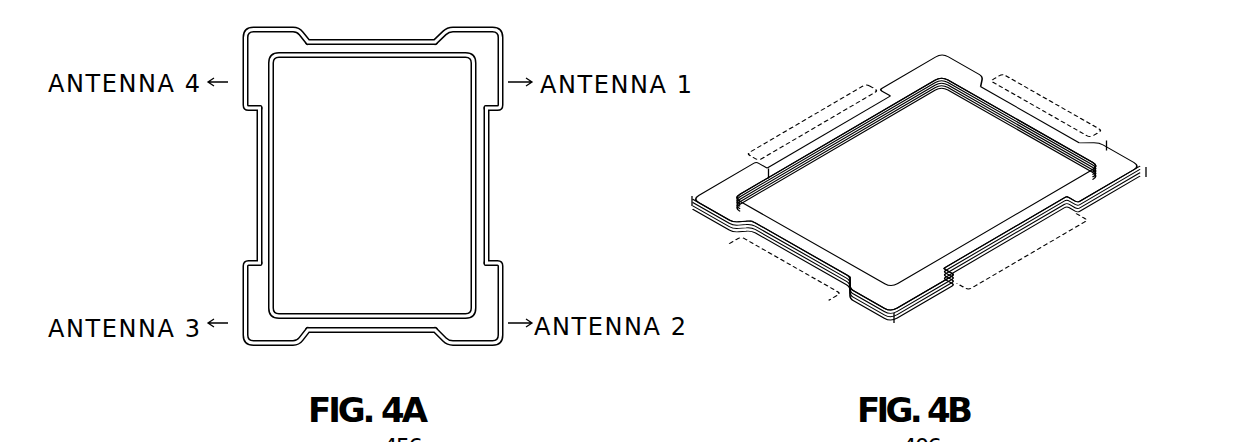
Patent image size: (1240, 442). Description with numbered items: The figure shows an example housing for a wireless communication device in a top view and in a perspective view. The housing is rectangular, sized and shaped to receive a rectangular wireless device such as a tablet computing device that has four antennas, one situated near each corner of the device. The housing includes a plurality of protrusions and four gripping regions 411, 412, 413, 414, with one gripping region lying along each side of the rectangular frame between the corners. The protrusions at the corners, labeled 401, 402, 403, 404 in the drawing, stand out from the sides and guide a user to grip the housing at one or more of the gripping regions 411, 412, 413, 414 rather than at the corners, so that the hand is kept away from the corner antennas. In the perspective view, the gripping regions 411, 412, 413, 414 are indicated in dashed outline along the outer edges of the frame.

In FIG. 4A, the first corner portion (antenna 1 feed) 401 is at (505, 55).
In FIG. 4B, the first corner portion (antenna 1 feed) 401 is at (1148, 172).
In FIG. 4A, the second corner portion (antenna 2 feed) 402 is at (505, 283).
In FIG. 4B, the second corner portion (antenna 2 feed) 402 is at (893, 323).
In FIG. 4A, the third corner portion (antenna 3 feed) 403 is at (243, 296).
In FIG. 4B, the third corner portion (antenna 3 feed) 403 is at (690, 195).
In FIG. 4A, the fourth corner portion (antenna 4 feed) 404 is at (243, 50).
In FIG. 4B, the fourth corner portion (antenna 4 feed) 404 is at (930, 57).
In FIG. 4A, the gripping region 411 is at (488, 196).
In FIG. 4B, the gripping region 411 is at (1028, 265).
In FIG. 4A, the gripping region 412 is at (367, 330).
In FIG. 4B, the gripping region 412 is at (777, 268).
In FIG. 4A, the gripping region 413 is at (250, 192).
In FIG. 4B, the gripping region 413 is at (805, 113).
In FIG. 4A, the gripping region 414 is at (373, 40).
In FIG. 4B, the gripping region 414 is at (1048, 100).